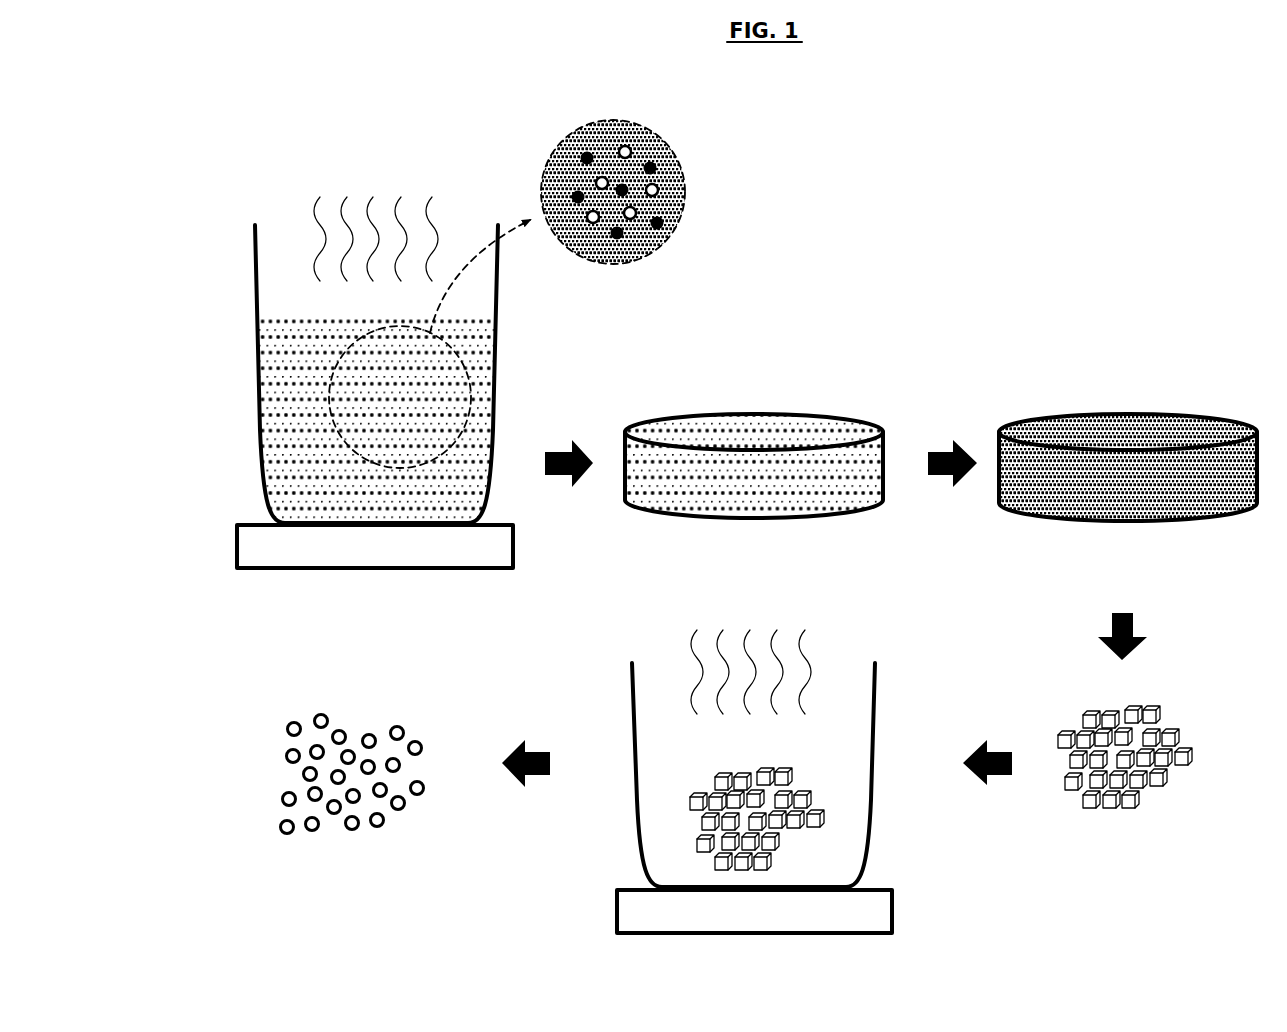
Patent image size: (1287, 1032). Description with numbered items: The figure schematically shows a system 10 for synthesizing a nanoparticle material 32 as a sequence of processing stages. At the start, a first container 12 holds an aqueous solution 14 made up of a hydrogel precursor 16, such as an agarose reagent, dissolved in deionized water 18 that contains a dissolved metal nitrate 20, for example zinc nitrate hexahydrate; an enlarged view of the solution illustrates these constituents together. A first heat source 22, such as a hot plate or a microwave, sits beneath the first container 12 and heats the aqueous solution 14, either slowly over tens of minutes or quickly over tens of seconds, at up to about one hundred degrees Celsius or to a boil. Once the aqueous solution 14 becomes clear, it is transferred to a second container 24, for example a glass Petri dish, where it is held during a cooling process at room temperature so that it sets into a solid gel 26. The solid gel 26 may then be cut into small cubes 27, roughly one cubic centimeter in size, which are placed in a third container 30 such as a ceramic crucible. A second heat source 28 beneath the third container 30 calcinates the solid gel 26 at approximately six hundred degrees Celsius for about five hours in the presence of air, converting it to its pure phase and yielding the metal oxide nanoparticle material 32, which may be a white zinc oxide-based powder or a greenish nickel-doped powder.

The system 10 is at (1174, 213).
The first container 12 is at (260, 400).
The aqueous solution 14 is at (290, 478).
The hydrogel precursor 16 is at (583, 152).
The deionized water 18 is at (618, 146).
The metal nitrate 20 is at (654, 166).
The first heat source 22 is at (237, 543).
The second container 24 is at (660, 516).
The solid gel 26 is at (954, 642).
The small cubes 27 is at (1157, 782).
The second heat source 28 is at (892, 910).
The third container 30 is at (868, 828).
The nanoparticle material 32 is at (263, 738).